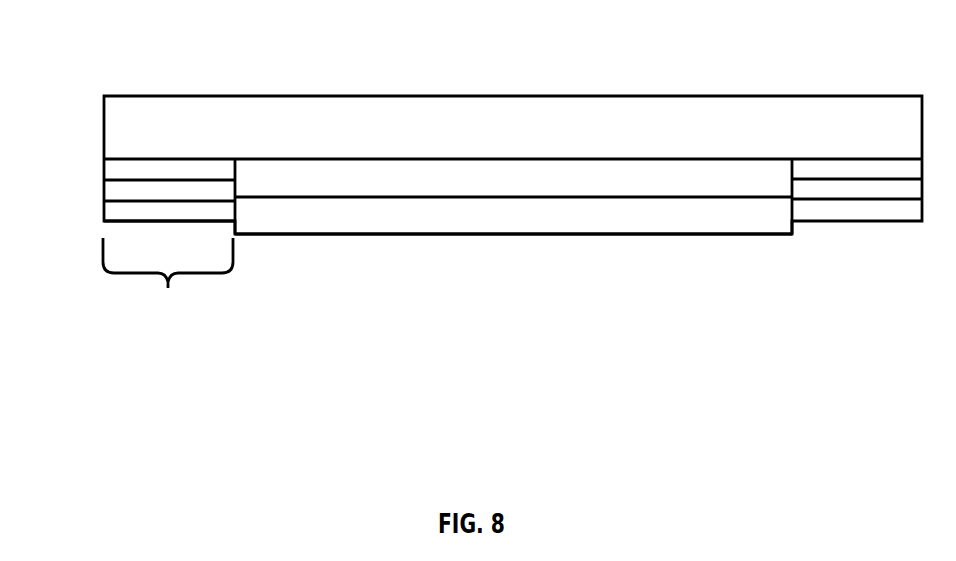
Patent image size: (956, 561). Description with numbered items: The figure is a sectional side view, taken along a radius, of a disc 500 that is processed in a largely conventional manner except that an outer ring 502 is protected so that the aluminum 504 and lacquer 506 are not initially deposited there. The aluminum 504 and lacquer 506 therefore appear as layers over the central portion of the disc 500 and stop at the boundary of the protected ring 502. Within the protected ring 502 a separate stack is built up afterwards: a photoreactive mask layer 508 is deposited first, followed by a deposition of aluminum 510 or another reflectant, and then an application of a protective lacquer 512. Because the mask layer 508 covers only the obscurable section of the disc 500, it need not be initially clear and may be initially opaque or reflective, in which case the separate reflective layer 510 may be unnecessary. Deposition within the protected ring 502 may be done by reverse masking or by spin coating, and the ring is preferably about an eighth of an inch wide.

The disc 500 is at (468, 179).
The outer ring 502 is at (168, 282).
The aluminum 504 is at (290, 182).
The lacquer 506 is at (367, 222).
The photoreactive mask layer 508 is at (104, 166).
The aluminum 510 is at (104, 191).
The protective lacquer 512 is at (104, 213).